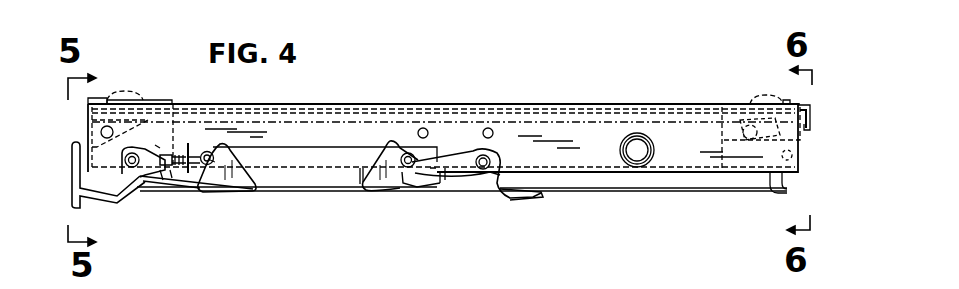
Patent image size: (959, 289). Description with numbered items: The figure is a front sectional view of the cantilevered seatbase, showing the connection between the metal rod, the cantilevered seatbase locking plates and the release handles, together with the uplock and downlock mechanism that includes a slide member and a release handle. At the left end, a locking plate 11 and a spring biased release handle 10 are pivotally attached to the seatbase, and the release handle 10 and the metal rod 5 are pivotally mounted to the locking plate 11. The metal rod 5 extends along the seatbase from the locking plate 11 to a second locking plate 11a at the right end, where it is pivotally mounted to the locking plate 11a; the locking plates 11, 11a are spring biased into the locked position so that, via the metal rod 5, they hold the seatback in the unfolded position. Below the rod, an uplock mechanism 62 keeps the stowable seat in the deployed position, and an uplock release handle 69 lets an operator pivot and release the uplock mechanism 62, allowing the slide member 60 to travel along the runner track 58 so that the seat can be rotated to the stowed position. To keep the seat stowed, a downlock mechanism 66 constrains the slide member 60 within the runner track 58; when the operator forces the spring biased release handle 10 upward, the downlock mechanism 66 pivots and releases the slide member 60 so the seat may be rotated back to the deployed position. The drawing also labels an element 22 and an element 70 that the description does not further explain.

The metal rod 5 is at (427, 107).
The spring biased release handle 10 is at (68, 178).
The locking plate 11 is at (107, 97).
The locking plate 11a is at (782, 97).
The spring biased bolt 22 is at (162, 152).
The runner track 58 is at (313, 157).
The slide member 60 is at (197, 184).
The uplock mechanism 62 is at (254, 188).
The downlock mechanism 66 is at (357, 190).
The uplock release handle 69 is at (520, 197).
The actuating lever 70 is at (107, 203).